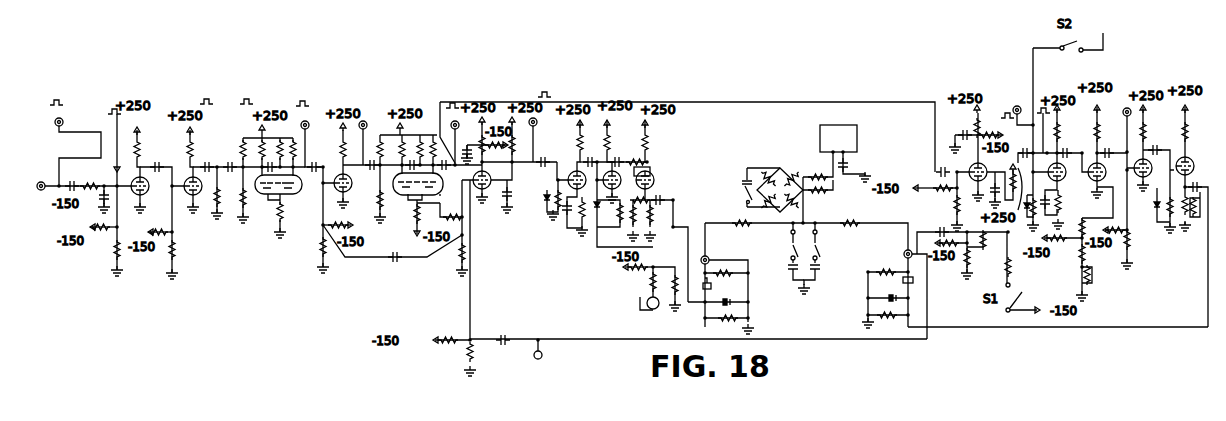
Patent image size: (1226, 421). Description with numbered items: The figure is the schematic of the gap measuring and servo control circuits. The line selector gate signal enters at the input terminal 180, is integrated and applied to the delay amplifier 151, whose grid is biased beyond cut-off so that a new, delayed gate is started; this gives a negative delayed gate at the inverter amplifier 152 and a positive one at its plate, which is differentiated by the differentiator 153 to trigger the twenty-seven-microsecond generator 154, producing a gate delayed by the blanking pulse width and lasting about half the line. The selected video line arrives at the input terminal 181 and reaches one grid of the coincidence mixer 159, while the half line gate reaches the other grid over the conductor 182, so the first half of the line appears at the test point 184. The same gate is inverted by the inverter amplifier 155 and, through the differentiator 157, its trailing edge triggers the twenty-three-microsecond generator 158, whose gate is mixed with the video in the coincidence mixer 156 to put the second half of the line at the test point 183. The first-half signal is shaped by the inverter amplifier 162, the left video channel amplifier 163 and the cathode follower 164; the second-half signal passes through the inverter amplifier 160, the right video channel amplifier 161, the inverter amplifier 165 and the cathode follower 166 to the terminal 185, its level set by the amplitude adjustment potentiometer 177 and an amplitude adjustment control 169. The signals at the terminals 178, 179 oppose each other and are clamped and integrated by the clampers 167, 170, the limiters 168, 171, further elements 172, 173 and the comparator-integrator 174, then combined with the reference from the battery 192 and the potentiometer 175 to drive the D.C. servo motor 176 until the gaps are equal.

The delay amplifier 151 is at (145, 193).
The inverter amplifier 152 is at (191, 208).
The differentiator 153 is at (242, 170).
The 27-microsecond generator 154 is at (273, 193).
The inverter amplifier 155 is at (338, 181).
The coincidence mixer 156 is at (974, 166).
The differentiator 157 is at (366, 150).
The 23-microsecond generator 158 is at (446, 219).
The coincidence mixer 159 is at (509, 165).
The inverter amplifier 160 is at (1060, 182).
The right video channel amplifier 161 is at (1099, 178).
The inverter amplifier 162 is at (570, 176).
The left video channel amplifier 163 is at (614, 188).
The cathode follower 164 is at (652, 173).
The inverter amplifier 165 is at (1137, 177).
The cathode follower 166 is at (1190, 162).
The clamper 167 is at (917, 311).
The limiter 168 is at (913, 278).
The amplitude adjustment control 169 is at (649, 311).
The clamper 170 is at (704, 320).
The limiter 171 is at (711, 286).
The switch capacitor 172 is at (789, 262).
The switch capacitor 173 is at (818, 262).
The comparator-integrator 174 is at (840, 210).
The potentiometer 175 is at (792, 177).
The D.C. servo motor 176 is at (857, 138).
The amplitude adjustment potentiometer 177 is at (1200, 219).
The terminal 178 is at (1203, 183).
The terminal 179 is at (675, 200).
The input terminal 180 is at (64, 121).
The input terminal 181 is at (544, 355).
The conductor 182 is at (410, 258).
The test point 183 is at (1016, 107).
The test point 184 is at (535, 117).
The terminal 185 is at (1102, 50).
The battery 192 is at (747, 168).